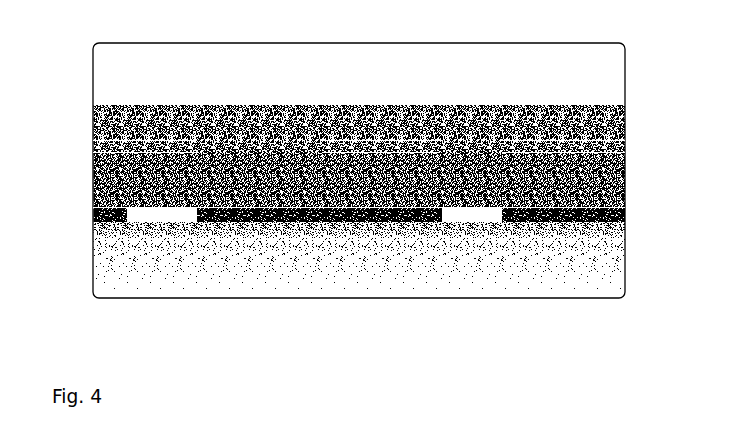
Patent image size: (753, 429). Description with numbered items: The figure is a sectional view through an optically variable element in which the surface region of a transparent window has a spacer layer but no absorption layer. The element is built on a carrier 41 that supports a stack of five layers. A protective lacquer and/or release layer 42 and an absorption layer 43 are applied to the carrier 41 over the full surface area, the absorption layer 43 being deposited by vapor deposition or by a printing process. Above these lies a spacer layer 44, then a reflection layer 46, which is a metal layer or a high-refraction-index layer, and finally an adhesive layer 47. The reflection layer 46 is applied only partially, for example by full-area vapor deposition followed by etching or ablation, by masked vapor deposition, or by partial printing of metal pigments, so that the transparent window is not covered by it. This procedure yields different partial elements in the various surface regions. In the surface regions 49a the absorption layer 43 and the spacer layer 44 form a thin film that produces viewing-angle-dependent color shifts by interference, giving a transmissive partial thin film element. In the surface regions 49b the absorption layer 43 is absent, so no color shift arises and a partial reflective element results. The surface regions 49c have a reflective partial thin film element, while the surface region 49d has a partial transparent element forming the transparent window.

The carrier 41 is at (615, 58).
The protective lacquer and/or release layer 42 is at (101, 126).
The absorption layer 43 is at (625, 143).
The spacer layer 44 is at (97, 172).
The reflection layer 46 is at (625, 213).
The adhesive layer 47 is at (595, 268).
The surface region 49a is at (144, 223).
The surface region 49b is at (272, 232).
The surface region 49c is at (386, 227).
The surface region 49d is at (558, 237).